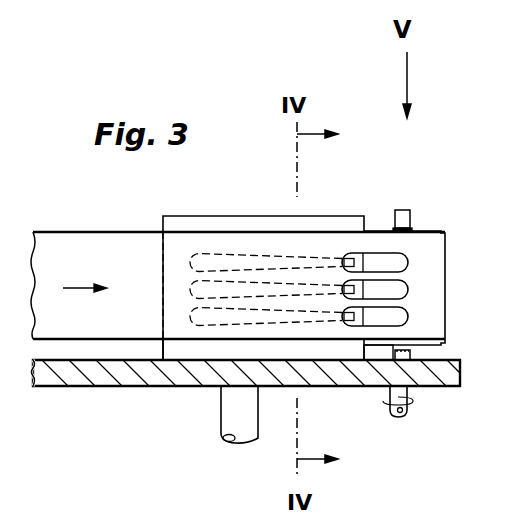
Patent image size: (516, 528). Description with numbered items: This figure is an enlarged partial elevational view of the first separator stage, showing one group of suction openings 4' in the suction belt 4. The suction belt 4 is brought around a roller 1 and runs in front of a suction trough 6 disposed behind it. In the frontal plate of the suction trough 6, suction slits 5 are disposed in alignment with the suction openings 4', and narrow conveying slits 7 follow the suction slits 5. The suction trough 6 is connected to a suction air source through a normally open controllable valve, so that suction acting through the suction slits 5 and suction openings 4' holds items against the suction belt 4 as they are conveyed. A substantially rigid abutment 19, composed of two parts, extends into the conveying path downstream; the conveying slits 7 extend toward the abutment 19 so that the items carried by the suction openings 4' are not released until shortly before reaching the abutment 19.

The roller 1 is at (432, 231).
The suction belt 4 is at (238, 270).
The suction openings 4' is at (418, 289).
The suction slits 5 is at (204, 325).
The suction trough 6 is at (234, 216).
The conveying slits 7 is at (311, 323).
The abutment 19 is at (408, 220).